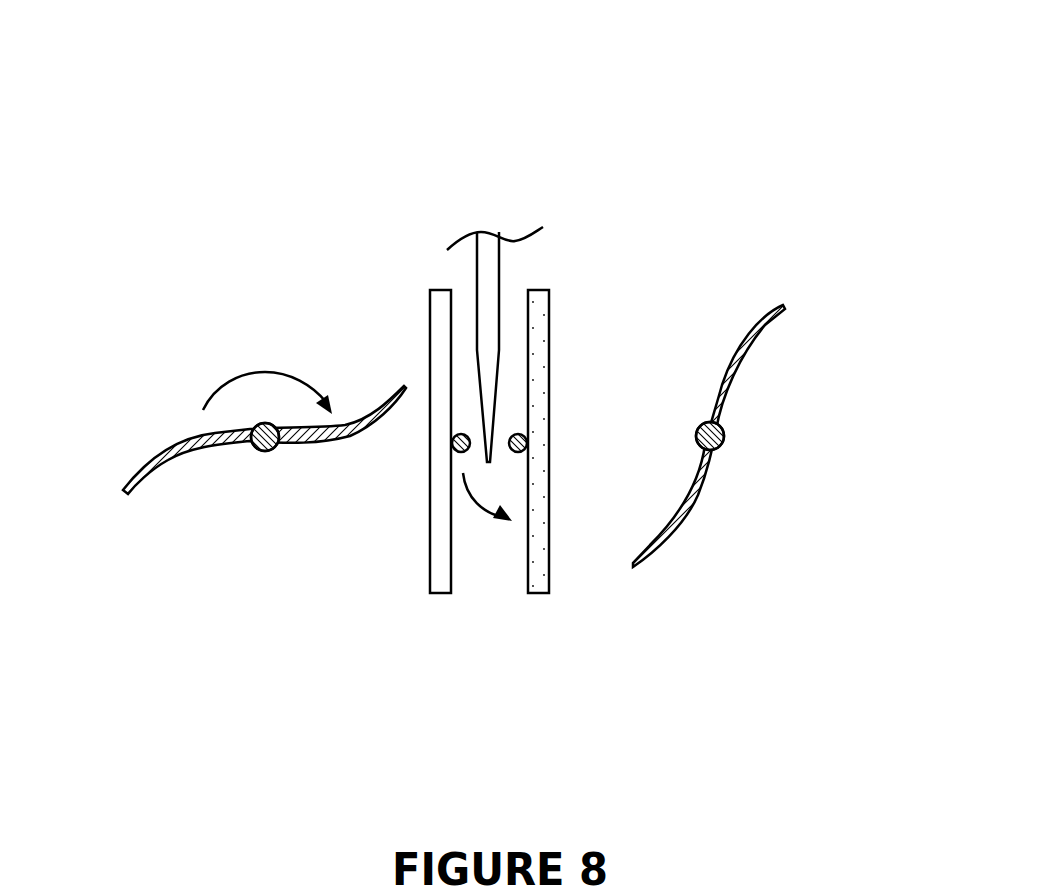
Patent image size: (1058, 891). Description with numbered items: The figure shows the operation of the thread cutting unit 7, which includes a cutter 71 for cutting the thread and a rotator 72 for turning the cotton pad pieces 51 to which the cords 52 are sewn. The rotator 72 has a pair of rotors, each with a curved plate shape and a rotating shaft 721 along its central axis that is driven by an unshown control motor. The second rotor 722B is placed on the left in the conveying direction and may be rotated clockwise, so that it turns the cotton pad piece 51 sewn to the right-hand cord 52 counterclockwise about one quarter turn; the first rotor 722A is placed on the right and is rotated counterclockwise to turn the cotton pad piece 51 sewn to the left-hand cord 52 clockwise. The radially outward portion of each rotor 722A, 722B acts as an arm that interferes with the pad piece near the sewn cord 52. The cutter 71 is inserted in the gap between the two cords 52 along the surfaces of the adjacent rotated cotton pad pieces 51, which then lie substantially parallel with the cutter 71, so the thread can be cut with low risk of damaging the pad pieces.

The thread cutting unit 7 is at (531, 166).
The cutter 71 is at (485, 350).
The cotton pad piece 51 is at (542, 332).
The cord 52 is at (452, 446).
The rotator 72 is at (208, 370).
The rotating shaft 721 is at (263, 450).
The first rotor 722A is at (732, 342).
The second rotor 722B is at (378, 397).